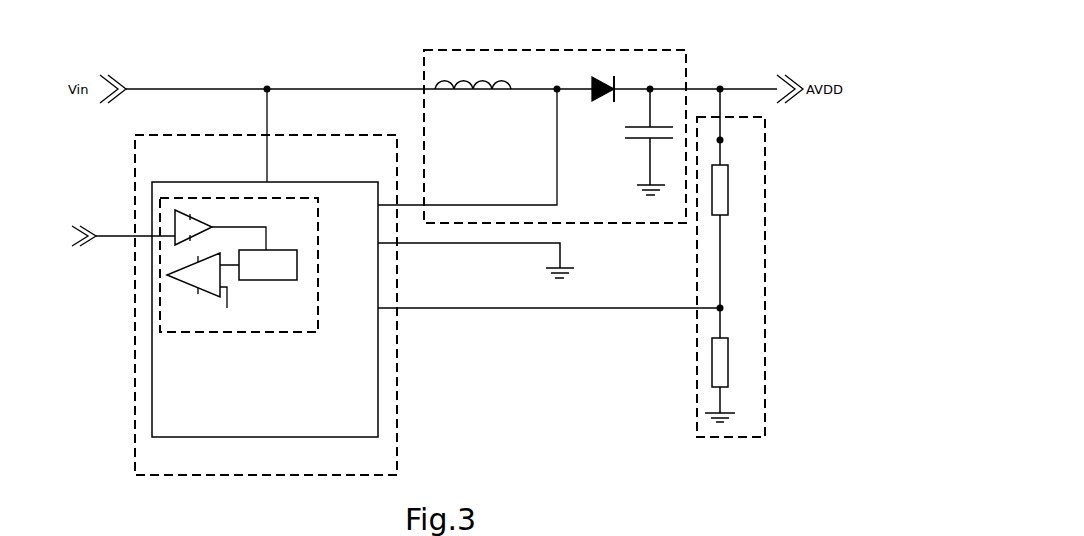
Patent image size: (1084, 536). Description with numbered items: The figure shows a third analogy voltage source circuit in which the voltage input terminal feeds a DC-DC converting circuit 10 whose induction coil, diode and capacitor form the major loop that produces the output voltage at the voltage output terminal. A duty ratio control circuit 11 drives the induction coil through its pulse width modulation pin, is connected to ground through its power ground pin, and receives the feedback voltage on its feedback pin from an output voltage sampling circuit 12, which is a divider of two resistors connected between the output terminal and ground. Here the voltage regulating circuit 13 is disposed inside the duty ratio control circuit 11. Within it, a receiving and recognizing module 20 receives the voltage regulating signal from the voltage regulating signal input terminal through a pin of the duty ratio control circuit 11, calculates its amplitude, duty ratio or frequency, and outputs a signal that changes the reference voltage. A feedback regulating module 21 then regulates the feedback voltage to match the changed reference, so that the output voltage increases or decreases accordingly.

The DC-DC converting circuit 10 is at (658, 68).
The duty ratio control circuit 11 is at (376, 305).
The output voltage sampling circuit 12 is at (745, 264).
The voltage regulating circuit 13 is at (182, 296).
The receiving and recognizing module 20 is at (175, 222).
The feedback regulating module 21 is at (192, 268).